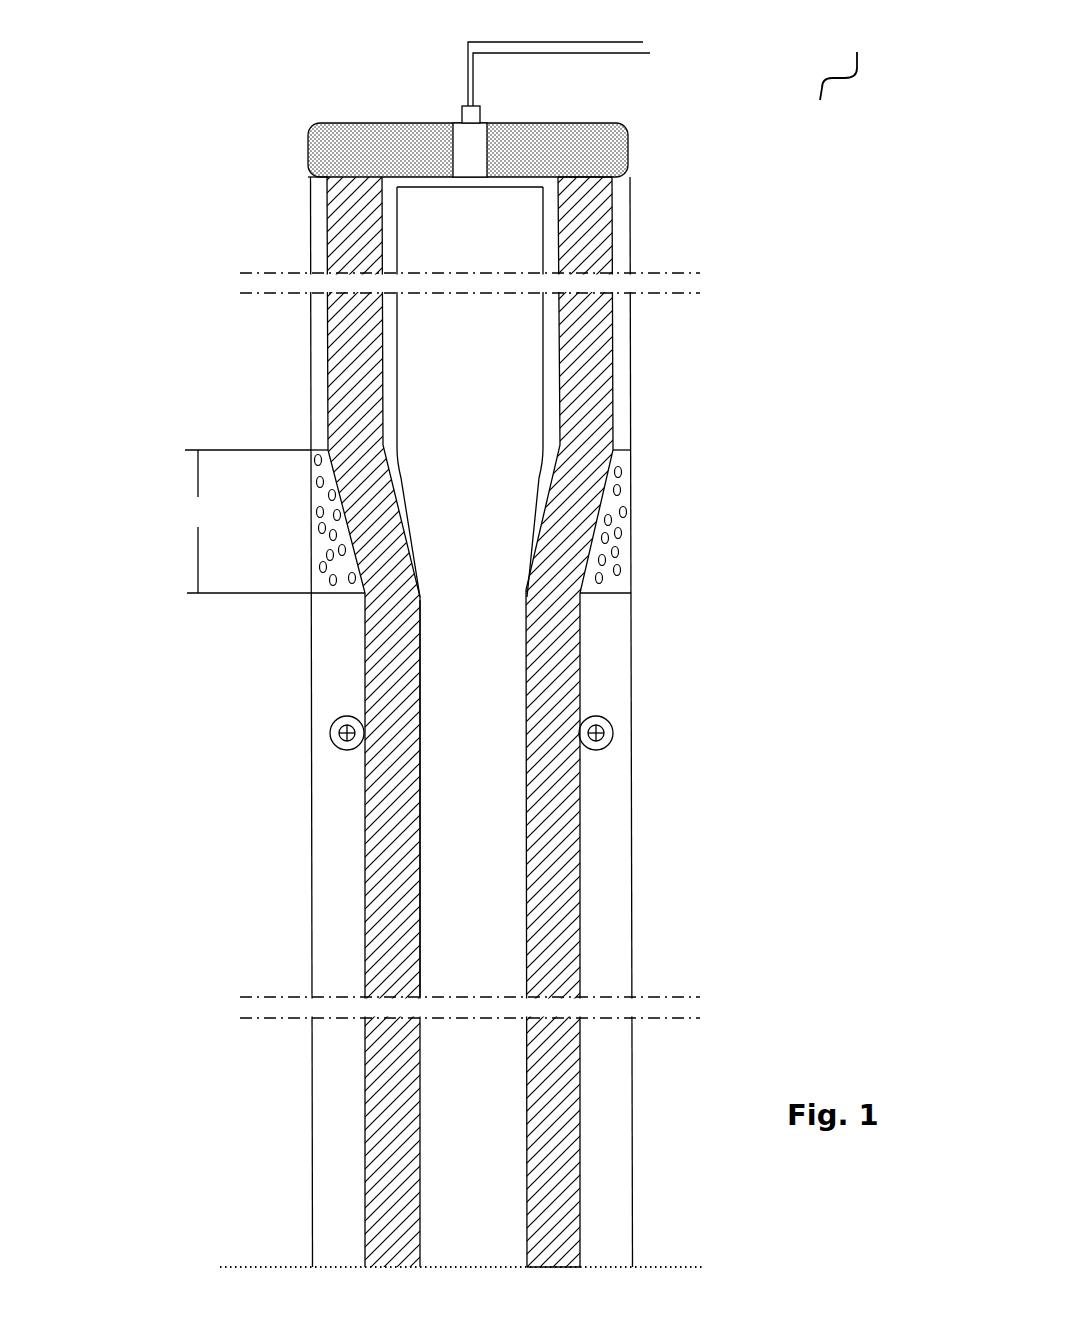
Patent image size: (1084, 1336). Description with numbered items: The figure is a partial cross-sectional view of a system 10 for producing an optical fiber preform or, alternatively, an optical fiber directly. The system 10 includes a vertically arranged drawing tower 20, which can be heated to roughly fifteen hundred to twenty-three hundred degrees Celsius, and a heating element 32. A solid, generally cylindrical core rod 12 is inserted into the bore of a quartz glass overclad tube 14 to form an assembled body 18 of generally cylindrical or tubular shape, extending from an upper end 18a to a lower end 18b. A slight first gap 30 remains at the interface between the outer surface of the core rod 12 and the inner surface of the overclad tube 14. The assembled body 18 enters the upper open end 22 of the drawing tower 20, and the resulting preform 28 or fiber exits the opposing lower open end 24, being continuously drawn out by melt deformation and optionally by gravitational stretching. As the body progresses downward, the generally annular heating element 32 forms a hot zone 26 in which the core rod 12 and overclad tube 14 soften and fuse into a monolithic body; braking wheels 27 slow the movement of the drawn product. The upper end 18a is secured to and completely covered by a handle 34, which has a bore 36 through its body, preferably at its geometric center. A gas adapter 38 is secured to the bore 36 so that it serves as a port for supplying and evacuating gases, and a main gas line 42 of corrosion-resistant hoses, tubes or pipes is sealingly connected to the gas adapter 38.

The system 10 is at (845, 60).
The core rod 12 is at (463, 360).
The overclad tube 14 is at (603, 232).
The assembled body 18 is at (600, 367).
The upper end of the assembled body 18a is at (612, 185).
The lower end of the assembled body 18b is at (579, 1263).
The drawing tower 20 is at (310, 233).
The upper open end 22 is at (310, 175).
The lower open end 24 is at (310, 1262).
The hot zone 26 is at (275, 521).
The braking wheels 27 is at (331, 730).
The optical fiber preform 28 is at (408, 878).
The first gap 30 is at (388, 397).
The heating element 32 is at (628, 502).
The handle 34 is at (353, 148).
The bore 36 is at (460, 137).
The gas adapter 38 is at (463, 117).
The main gas line 42 is at (607, 41).